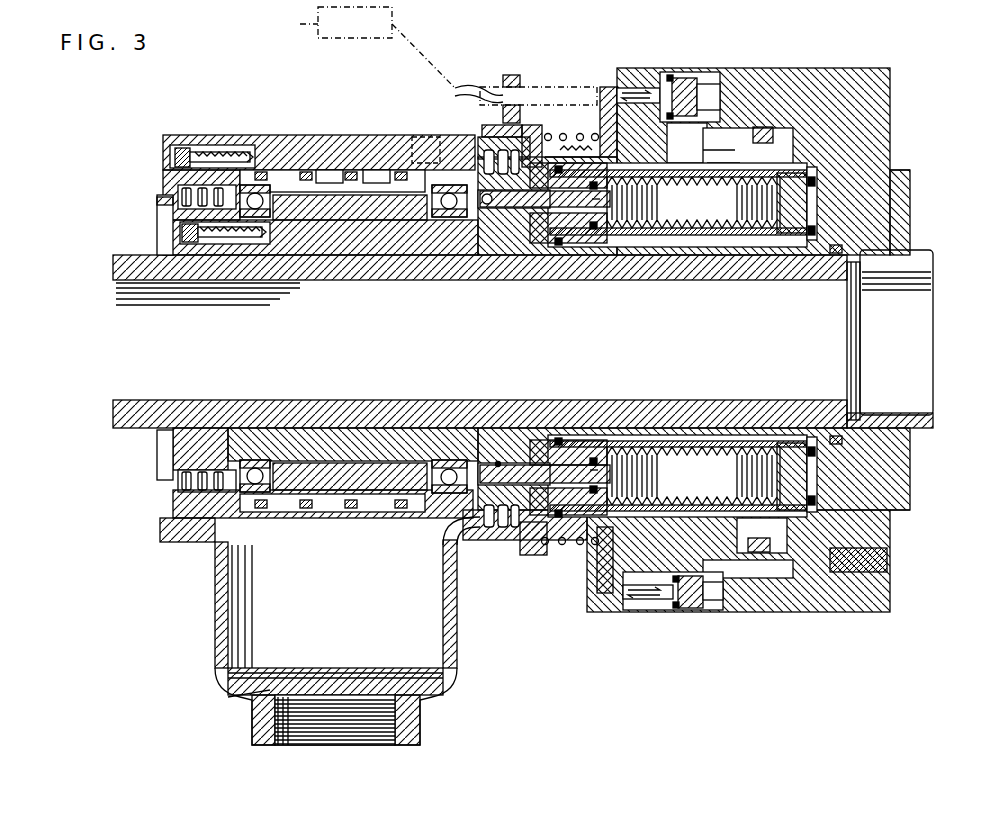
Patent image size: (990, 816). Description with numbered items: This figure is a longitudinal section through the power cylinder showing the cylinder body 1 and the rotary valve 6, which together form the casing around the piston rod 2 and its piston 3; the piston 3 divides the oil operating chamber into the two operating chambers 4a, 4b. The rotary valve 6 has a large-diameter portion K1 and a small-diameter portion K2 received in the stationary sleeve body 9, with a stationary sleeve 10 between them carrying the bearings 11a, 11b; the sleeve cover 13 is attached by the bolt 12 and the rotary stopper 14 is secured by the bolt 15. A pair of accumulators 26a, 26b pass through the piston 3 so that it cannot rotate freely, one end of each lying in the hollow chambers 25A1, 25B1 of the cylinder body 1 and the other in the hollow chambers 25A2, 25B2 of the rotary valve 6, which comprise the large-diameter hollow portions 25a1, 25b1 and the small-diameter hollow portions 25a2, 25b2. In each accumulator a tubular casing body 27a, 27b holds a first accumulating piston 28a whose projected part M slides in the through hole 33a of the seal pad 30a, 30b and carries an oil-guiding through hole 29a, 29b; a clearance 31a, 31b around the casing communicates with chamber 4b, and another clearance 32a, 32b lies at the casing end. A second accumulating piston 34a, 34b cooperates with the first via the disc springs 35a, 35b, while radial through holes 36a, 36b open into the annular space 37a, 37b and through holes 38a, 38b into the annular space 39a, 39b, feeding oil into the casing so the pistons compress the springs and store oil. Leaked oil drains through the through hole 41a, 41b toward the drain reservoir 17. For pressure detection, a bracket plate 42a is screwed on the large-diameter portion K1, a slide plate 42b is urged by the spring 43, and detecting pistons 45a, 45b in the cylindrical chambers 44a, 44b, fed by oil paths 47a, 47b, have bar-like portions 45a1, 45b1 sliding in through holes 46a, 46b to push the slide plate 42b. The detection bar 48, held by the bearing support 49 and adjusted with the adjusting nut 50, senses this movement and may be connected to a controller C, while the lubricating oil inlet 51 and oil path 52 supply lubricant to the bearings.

The cylinder body 1 is at (882, 86).
The piston rod 2 is at (113, 268).
The piston 3 is at (800, 138).
The operating chamber 4a is at (830, 150).
The operating chamber 4b is at (765, 128).
The rotary valve 6 is at (301, 284).
The sleeve body 9 is at (275, 165).
The sleeve 10 is at (290, 185).
The bearing 11a is at (438, 222).
The bearing 11b is at (262, 145).
The bolt 12 is at (172, 152).
The sleeve cover 13 is at (170, 180).
The rotary stopper 14 is at (178, 198).
The bolt 15 is at (180, 233).
The drain reservoir 17 is at (342, 624).
The hollow chamber 25A1 is at (812, 172).
The hollow chamber 25A2 is at (662, 238).
The large-diameter hollow portion 25a1 is at (642, 242).
The small-diameter hollow portion 25a2 is at (500, 208).
The hollow chamber 25B1 is at (796, 441).
The hollow chamber 25B2 is at (613, 567).
The large-diameter hollow portion 25b1 is at (646, 441).
The small-diameter hollow portion 25b2 is at (498, 462).
The accumulator 26a is at (718, 219).
The accumulator 26b is at (720, 494).
The tubular casing body 27a is at (748, 236).
The tubular casing body 27b is at (602, 440).
The first accumulating piston 28a is at (600, 245).
The through hole 29a is at (478, 236).
The through hole 29b is at (470, 525).
The seal pad 30a is at (482, 131).
The seal pad 30b is at (530, 555).
The clearance 31a is at (703, 236).
The clearance 31b is at (702, 445).
The clearance 32a is at (795, 178).
The clearance 32b is at (802, 514).
The through hole 33a is at (545, 188).
The second accumulating piston 34a is at (792, 236).
The second accumulating piston 34b is at (776, 446).
The disc springs 35a is at (722, 232).
The disc springs 35b is at (738, 448).
The through holes 36a is at (532, 125).
The through holes 36b is at (548, 443).
The annular space 37a is at (592, 243).
The annular space 37b is at (582, 452).
The through holes 38a is at (818, 178).
The through holes 38b is at (818, 440).
The annular space 39a is at (816, 184).
The annular space 39b is at (816, 458).
The through hole 41a is at (470, 170).
The through hole 41b is at (452, 462).
The bracket plate 42a is at (460, 92).
The slide plate 42b is at (540, 87).
The spring 43 is at (511, 75).
The cylindrical chamber 44a is at (725, 72).
The cylindrical chamber 44b is at (728, 610).
The detecting piston 45a is at (685, 80).
The bar-like portion 45a1 is at (633, 86).
The detecting piston 45b is at (690, 608).
The bar-like portion 45b1 is at (660, 610).
The through hole 46a is at (668, 70).
The through hole 46b is at (630, 610).
The oil path 47a is at (718, 140).
The oil path 47b is at (762, 578).
The detection bar 48 is at (503, 92).
The bearing support 49 is at (480, 130).
The adjusting nut 50 is at (510, 80).
The lubricating oil inlet 51 is at (372, 128).
The oil path 52 is at (333, 210).
The controller C is at (370, 47).
The projected part M is at (487, 204).
The large-diameter portion K1 is at (614, 148).
The small-diameter portion K2 is at (318, 180).